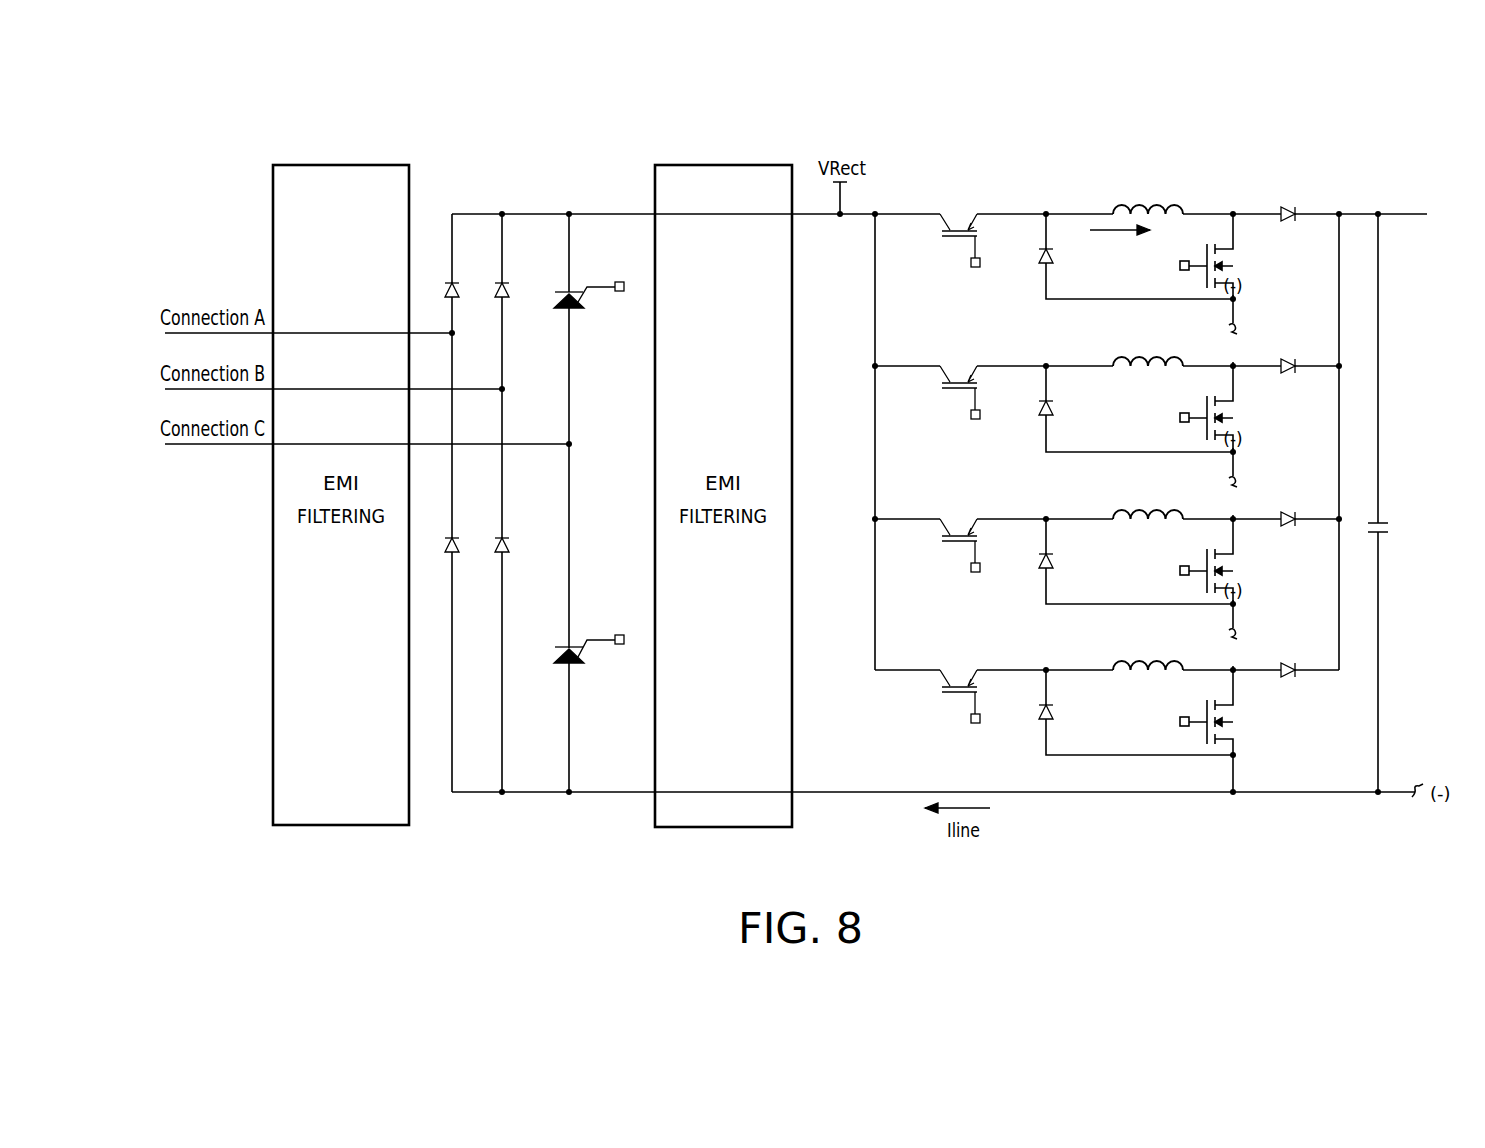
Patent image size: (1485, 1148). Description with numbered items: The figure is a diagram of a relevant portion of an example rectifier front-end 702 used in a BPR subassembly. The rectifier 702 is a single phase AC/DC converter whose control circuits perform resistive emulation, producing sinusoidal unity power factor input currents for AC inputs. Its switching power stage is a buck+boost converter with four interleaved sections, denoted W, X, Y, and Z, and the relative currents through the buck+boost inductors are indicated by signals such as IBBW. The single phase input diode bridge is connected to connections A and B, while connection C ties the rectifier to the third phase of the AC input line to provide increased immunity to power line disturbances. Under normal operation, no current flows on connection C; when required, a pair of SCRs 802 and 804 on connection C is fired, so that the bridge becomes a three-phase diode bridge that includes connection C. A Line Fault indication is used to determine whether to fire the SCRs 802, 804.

The rectifier front-end 702 is at (1252, 156).
The SCR 802 is at (602, 287).
The SCR 804 is at (602, 640).